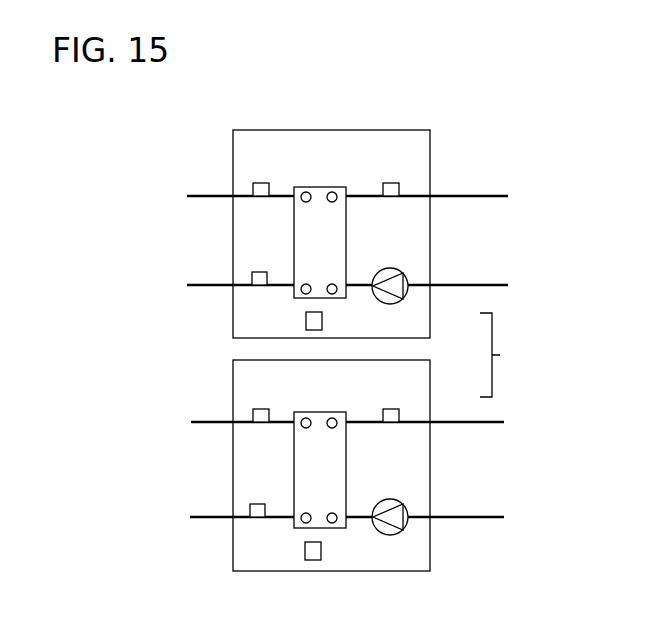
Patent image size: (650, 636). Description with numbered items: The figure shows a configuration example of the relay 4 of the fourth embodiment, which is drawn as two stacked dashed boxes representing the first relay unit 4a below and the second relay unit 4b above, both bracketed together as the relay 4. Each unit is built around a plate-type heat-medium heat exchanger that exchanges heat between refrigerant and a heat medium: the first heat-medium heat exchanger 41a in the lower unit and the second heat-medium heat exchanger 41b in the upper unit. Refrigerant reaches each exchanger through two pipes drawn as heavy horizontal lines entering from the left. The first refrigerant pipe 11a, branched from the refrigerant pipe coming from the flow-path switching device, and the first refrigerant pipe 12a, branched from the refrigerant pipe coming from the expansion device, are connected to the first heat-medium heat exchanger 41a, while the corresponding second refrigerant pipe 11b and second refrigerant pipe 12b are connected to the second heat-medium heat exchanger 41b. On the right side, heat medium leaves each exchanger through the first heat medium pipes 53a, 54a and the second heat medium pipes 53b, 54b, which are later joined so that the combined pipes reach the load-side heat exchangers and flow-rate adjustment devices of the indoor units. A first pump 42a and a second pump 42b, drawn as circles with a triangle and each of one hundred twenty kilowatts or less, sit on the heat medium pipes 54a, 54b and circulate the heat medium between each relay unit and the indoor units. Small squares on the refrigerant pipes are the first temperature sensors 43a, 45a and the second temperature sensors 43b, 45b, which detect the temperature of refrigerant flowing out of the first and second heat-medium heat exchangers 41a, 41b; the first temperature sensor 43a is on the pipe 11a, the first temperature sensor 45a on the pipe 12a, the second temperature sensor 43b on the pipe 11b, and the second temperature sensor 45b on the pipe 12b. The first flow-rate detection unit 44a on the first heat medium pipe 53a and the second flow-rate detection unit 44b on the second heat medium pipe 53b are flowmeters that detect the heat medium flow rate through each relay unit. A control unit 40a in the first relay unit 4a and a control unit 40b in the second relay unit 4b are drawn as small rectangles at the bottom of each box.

The relay 4 is at (501, 355).
The first relay unit 4a is at (430, 391).
The second relay unit 4b is at (430, 333).
The first refrigerant pipe 11a is at (203, 420).
The second refrigerant pipe 11b is at (203, 193).
The first refrigerant pipe 12a is at (203, 516).
The second refrigerant pipe 12b is at (203, 282).
The control unit 40a is at (321, 551).
The control unit 40b is at (322, 321).
The first heat-medium heat exchanger 41a is at (305, 411).
The second heat-medium heat exchanger 41b is at (305, 186).
The first pump 42a is at (390, 499).
The second pump 42b is at (390, 268).
The first temperature sensor 43a is at (262, 408).
The second temperature sensor 43b is at (262, 182).
The first flow-rate detection unit 44a is at (391, 408).
The second flow-rate detection unit 44b is at (391, 182).
The first temperature sensor 45a is at (259, 503).
The second temperature sensor 45b is at (261, 271).
The first heat medium pipe 53a is at (470, 424).
The second heat medium pipe 53b is at (465, 194).
The first heat medium pipe 54a is at (470, 519).
The second heat medium pipe 54b is at (465, 283).